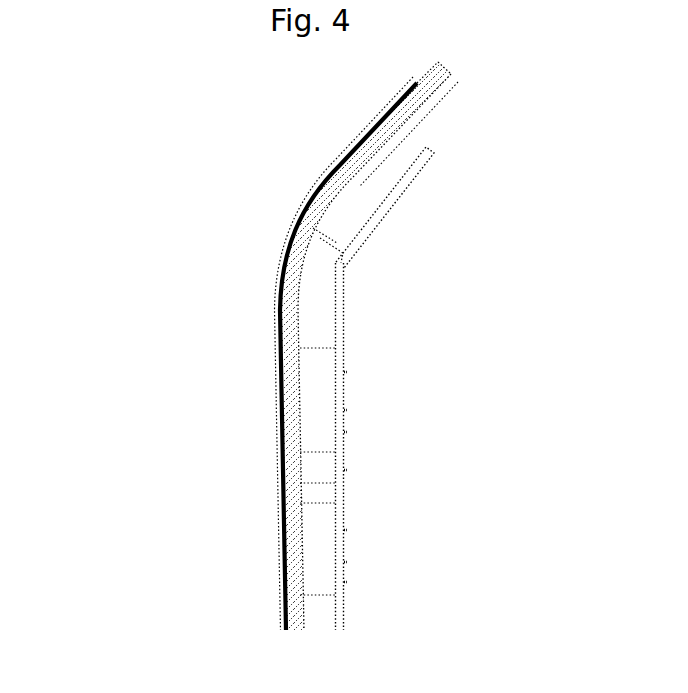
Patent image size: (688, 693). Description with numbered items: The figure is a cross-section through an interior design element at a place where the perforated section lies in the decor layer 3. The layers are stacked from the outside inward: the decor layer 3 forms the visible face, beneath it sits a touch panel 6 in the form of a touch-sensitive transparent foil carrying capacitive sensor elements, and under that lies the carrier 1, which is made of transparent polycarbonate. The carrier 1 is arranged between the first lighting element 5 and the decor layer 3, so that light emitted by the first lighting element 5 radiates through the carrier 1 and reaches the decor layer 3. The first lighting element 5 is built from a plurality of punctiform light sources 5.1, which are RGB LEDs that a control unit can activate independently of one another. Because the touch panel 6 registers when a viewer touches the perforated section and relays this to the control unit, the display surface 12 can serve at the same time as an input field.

The carrier 1 is at (410, 113).
The decor layer 3 is at (300, 213).
The first lighting element 5 is at (343, 268).
The punctiform light sources 5.1 is at (377, 208).
The touch panel 6 is at (417, 83).
The display surface 12 is at (272, 456).